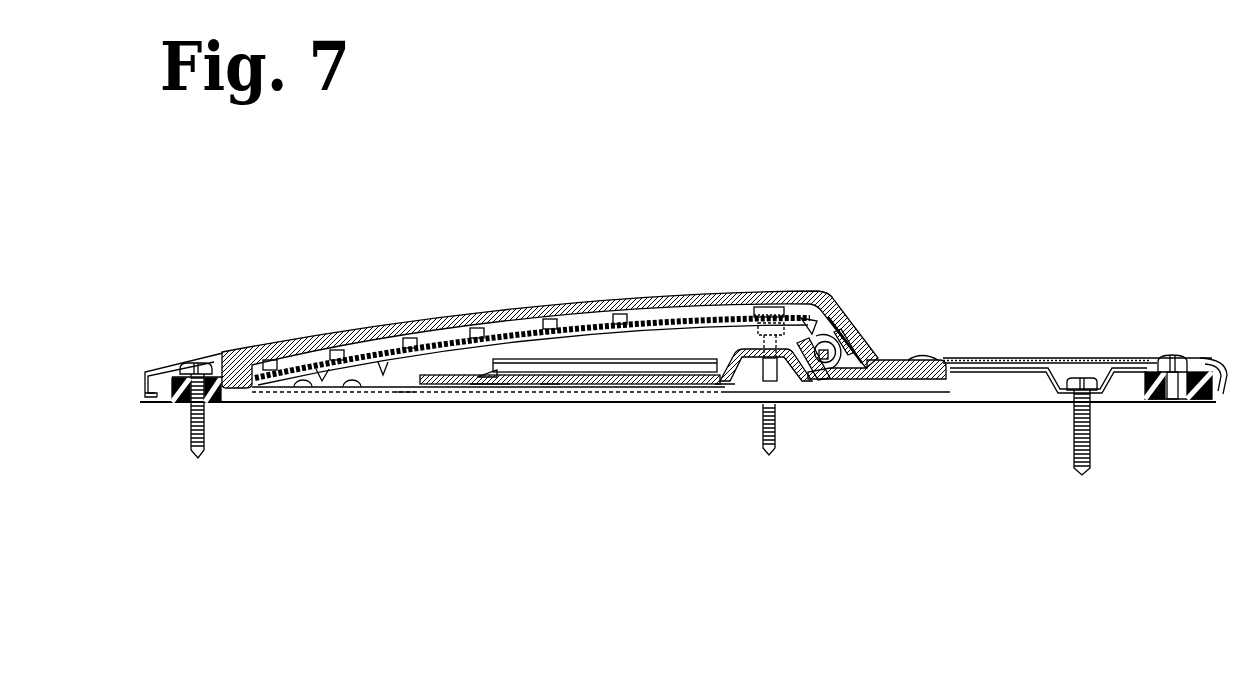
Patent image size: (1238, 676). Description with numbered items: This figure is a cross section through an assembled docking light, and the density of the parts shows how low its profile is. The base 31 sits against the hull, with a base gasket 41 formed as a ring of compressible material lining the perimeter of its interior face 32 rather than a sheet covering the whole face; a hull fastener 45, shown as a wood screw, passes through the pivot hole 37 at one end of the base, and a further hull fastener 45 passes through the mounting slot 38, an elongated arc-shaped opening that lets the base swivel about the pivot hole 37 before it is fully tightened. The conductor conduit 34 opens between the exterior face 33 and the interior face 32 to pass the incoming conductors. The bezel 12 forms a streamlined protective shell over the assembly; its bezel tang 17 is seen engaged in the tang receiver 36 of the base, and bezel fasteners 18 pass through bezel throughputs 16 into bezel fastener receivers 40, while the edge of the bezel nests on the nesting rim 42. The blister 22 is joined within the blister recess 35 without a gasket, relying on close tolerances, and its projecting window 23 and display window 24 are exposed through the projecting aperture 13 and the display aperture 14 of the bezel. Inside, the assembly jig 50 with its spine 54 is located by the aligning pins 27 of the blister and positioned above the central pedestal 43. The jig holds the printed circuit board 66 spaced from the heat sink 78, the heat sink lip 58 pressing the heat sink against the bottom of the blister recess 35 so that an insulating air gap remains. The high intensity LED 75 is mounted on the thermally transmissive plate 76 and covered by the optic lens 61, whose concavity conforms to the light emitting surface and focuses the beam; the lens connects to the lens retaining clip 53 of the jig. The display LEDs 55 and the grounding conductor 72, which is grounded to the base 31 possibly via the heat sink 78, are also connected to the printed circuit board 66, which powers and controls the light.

The bezel 12 is at (225, 353).
The projecting aperture 13 is at (877, 362).
The display aperture 14 is at (790, 307).
The bezel throughputs 16 is at (1165, 400).
The bezel tang 17 is at (162, 364).
The bezel fasteners 18 is at (1175, 354).
The blister 22 is at (927, 392).
The projecting window 23 is at (860, 333).
The display window 24 is at (665, 318).
The aligning pins 27 is at (752, 312).
The base 31 is at (997, 376).
The interior face 32 is at (662, 405).
The exterior face 33 is at (383, 373).
The conductor conduit 34 is at (322, 380).
The blister recess 35 is at (551, 390).
The tang receiver 36 is at (141, 405).
The pivot hole 37 is at (208, 405).
The mounting slot 38 is at (1063, 398).
The bezel fastener receivers 40 is at (1183, 400).
The base gasket 41 is at (174, 405).
The nesting rim 42 is at (1222, 358).
The central pedestal 43 is at (750, 392).
The hull fastener 45 is at (195, 362).
The assembly jig 50 is at (463, 358).
The lens retaining clip 53 is at (478, 390).
The spine 54 is at (507, 322).
The display LEDs 55 is at (612, 320).
The heat sink lip 58 is at (403, 394).
The optic lens 61 is at (846, 300).
The printed circuit board 66 is at (597, 360).
The grounding conductor 72 is at (499, 388).
The high intensity LED 75 is at (833, 392).
The thermally transmissive plate 76 is at (807, 392).
The heat sink 78 is at (612, 390).